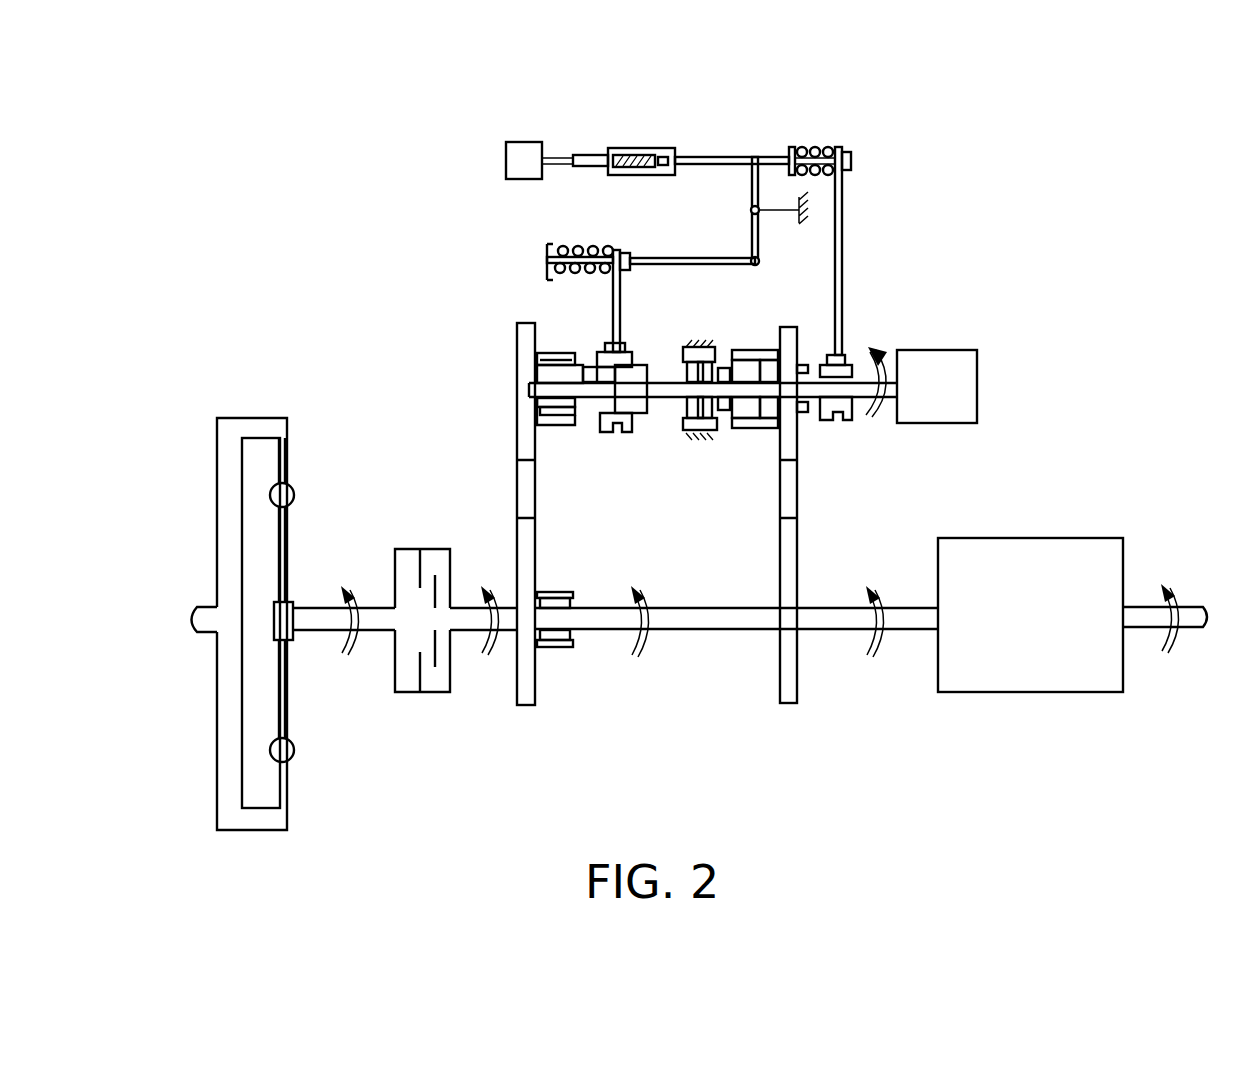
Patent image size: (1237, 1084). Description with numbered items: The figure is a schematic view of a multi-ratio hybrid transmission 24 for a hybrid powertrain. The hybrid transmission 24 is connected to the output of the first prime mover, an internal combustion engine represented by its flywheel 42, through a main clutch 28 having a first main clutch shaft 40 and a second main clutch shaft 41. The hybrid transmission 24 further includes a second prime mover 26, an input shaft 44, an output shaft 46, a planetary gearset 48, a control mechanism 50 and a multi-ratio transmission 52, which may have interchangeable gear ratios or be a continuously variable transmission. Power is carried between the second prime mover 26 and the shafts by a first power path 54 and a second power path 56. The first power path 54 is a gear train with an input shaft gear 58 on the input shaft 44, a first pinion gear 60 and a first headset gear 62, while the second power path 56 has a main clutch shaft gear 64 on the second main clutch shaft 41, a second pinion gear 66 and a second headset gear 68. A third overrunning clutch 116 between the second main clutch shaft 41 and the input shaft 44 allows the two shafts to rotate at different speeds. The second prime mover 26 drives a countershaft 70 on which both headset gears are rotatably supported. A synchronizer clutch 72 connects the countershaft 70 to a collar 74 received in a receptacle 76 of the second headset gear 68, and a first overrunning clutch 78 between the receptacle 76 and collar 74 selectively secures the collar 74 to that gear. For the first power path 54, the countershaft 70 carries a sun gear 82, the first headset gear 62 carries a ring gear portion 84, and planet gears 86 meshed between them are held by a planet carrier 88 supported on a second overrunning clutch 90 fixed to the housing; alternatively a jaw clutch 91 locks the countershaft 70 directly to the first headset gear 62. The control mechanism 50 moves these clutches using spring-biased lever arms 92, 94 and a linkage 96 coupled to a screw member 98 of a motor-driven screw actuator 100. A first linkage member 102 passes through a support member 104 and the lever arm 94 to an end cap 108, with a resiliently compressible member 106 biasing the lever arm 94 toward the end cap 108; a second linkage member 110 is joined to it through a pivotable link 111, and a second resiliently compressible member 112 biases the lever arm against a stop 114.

The hybrid transmission 24 is at (733, 725).
The second prime mover 26 is at (937, 386).
The main clutch 28 is at (427, 692).
The first main clutch shaft 40 is at (382, 605).
The second main clutch shaft 41 is at (512, 605).
The flywheel 42 is at (252, 830).
The input shaft 44 is at (700, 630).
The output shaft 46 is at (1193, 630).
The planetary gearset 48 is at (746, 337).
The control mechanism 50 is at (860, 134).
The multi-ratio transmission 52 is at (1030, 615).
The first power path 54 is at (812, 535).
The second power path 56 is at (508, 446).
The input shaft gear 58 is at (797, 675).
The first pinion gear 60 is at (797, 505).
The first headset gear 62 is at (780, 452).
The main clutch shaft gear 64 is at (536, 700).
The second pinion gear 66 is at (535, 483).
The second headset gear 68 is at (517, 370).
The countershaft 70 is at (672, 390).
The synchronizer clutch 72 is at (628, 344).
The collar 74 is at (597, 370).
The receptacle 76 is at (575, 412).
The first overrunning clutch 78 is at (557, 367).
The sun gear 82 is at (747, 390).
The ring gear portion 84 is at (733, 352).
The planet gears 86 is at (753, 368).
The planet carrier 88 is at (693, 345).
The second overrunning clutch 90 is at (698, 430).
The jaw clutch 91 is at (853, 412).
The lever arm 92 is at (623, 313).
The lever arm 94 is at (842, 260).
The linkage 96 is at (740, 200).
The screw member 98 is at (630, 147).
The screw actuator 100 is at (530, 133).
The first linkage member 102 is at (687, 157).
The support member 104 is at (790, 147).
The resiliently compressible member 106 is at (815, 147).
The end cap 108 is at (851, 160).
The second linkage member 110 is at (697, 258).
The pivotable link 111 is at (760, 228).
The second resiliently compressible member 112 is at (563, 246).
The stop 114 is at (625, 253).
The third overrunning clutch 116 is at (552, 603).